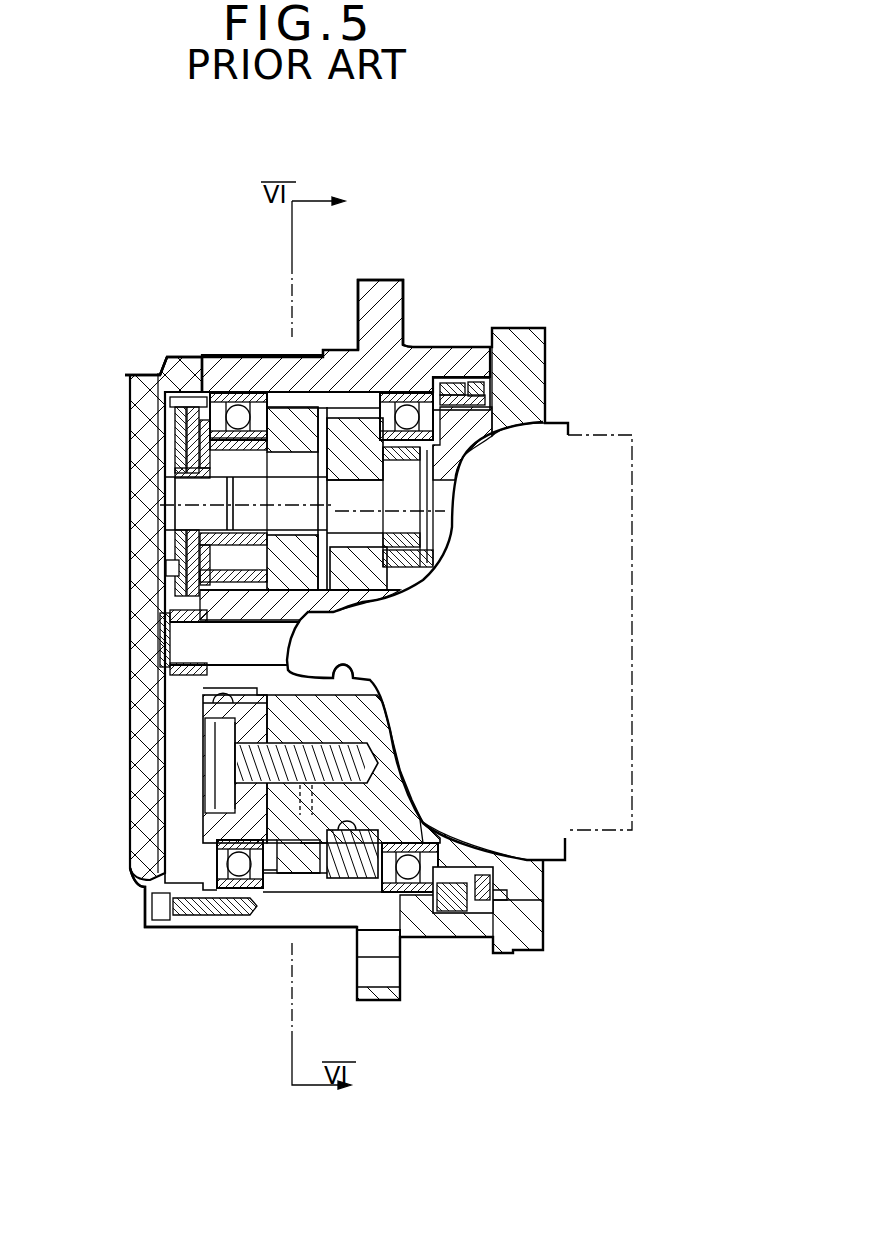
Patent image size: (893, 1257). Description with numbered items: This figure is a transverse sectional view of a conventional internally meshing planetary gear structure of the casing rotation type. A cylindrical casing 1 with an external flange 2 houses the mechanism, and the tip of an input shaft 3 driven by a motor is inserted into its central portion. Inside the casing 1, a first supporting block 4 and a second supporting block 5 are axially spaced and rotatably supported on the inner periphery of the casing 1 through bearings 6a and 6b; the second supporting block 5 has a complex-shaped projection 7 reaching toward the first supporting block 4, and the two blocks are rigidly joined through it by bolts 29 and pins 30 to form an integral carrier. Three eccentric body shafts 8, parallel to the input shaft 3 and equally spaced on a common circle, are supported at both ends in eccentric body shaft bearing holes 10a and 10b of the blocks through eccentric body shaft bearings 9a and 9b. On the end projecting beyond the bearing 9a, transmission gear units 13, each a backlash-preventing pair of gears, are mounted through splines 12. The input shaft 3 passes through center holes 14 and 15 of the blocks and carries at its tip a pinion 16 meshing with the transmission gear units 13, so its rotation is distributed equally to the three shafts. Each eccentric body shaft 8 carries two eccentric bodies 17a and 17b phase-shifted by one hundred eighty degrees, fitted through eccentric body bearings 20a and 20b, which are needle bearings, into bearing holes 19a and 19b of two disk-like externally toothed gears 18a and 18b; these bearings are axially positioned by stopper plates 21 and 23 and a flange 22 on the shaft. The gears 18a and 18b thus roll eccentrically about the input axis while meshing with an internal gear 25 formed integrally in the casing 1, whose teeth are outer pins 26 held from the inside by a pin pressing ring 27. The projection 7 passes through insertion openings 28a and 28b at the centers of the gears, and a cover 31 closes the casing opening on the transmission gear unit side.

The cylindrical casing 1 is at (338, 385).
The external flange 2 is at (345, 358).
The input shaft 3 is at (130, 712).
The first supporting block 4 is at (145, 887).
The second supporting block 5 is at (468, 865).
The bearing 6a is at (224, 884).
The bearing 6b is at (414, 877).
The projection 7 is at (382, 948).
The eccentric body shaft 8 is at (197, 498).
The eccentric body shaft bearing 9a is at (180, 574).
The eccentric body shaft bearing 9b is at (422, 574).
The eccentric body shaft bearing hole 10a is at (175, 617).
The eccentric body shaft bearing hole 10b is at (425, 574).
The splines 12 is at (183, 460).
The transmission gear unit 13 is at (185, 537).
The center hole 14 is at (215, 763).
The center hole 15 is at (381, 708).
The pinion 16 is at (210, 706).
The eccentric body 17a is at (167, 376).
The eccentric body 17b is at (412, 517).
The externally toothed gear 18a is at (273, 393).
The externally toothed gear 18b is at (378, 372).
The eccentric body bearing hole 19a is at (367, 527).
The eccentric body bearing hole 19b is at (378, 489).
The eccentric body bearing 20a is at (202, 356).
The eccentric body bearing 20b is at (377, 570).
The stopper plate 21 is at (191, 668).
The flange 22 is at (333, 583).
The stopper plate 23 is at (393, 570).
The internal gear 25 is at (298, 400).
The outer pins 26 is at (313, 393).
The pin pressing ring 27 is at (304, 896).
The insertion opening 28a is at (294, 884).
The insertion opening 28b is at (328, 888).
The bolts 29 is at (213, 799).
The pins 30 is at (277, 882).
The cover 31 is at (210, 872).